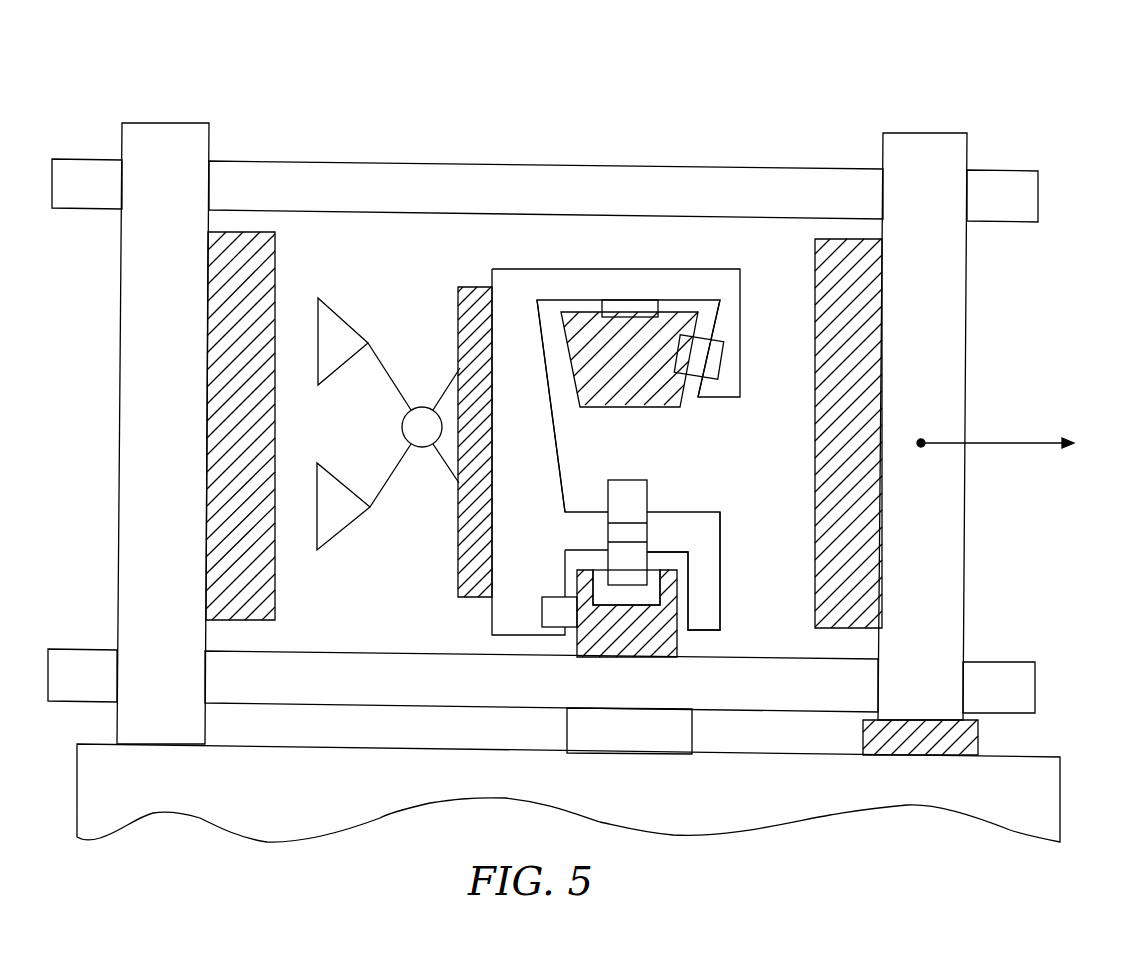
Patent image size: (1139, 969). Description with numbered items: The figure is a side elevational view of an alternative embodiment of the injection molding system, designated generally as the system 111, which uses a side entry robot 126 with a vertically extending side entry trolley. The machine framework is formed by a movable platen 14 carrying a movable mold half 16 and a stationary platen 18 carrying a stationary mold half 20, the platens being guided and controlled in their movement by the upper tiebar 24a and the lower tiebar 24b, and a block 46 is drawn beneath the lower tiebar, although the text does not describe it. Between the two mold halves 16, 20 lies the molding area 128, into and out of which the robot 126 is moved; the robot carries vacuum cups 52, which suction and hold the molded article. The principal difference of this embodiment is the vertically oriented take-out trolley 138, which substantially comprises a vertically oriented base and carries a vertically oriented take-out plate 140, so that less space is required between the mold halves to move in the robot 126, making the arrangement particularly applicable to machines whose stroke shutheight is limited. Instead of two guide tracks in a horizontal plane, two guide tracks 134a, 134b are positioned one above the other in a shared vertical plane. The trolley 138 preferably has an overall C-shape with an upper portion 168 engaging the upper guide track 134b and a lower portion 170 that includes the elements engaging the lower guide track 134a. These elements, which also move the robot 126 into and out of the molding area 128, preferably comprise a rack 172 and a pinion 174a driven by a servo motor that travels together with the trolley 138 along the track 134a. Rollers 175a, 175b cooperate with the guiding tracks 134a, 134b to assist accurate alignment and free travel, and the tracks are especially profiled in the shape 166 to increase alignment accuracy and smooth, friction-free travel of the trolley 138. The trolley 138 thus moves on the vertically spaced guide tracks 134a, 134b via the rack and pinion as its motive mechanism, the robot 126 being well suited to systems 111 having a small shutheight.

The movable platen 14 is at (913, 152).
The movable mold half 16 is at (825, 255).
The stationary platen 18 is at (158, 137).
The stationary mold half 20 is at (248, 257).
The upper tiebar 24a is at (1037, 184).
The lower tiebar 24b is at (1023, 678).
The support block 46 is at (623, 728).
The vacuum cups 52 is at (338, 317).
The injection molding system 111 is at (817, 85).
The robot 126 is at (343, 625).
The molding area 128 is at (373, 233).
The guide track 134a is at (653, 642).
The guide track 134b is at (577, 317).
The vertically oriented take-out trolley 138 is at (615, 272).
The vertically oriented take-out plate 140 is at (465, 300).
The profiled shape 166 is at (568, 352).
The upper portion 168 is at (682, 280).
The lower portion 170 is at (707, 610).
The rack 172 is at (650, 587).
The stop 174a is at (557, 617).
The roller 175a is at (628, 500).
The roller 175b is at (721, 371).